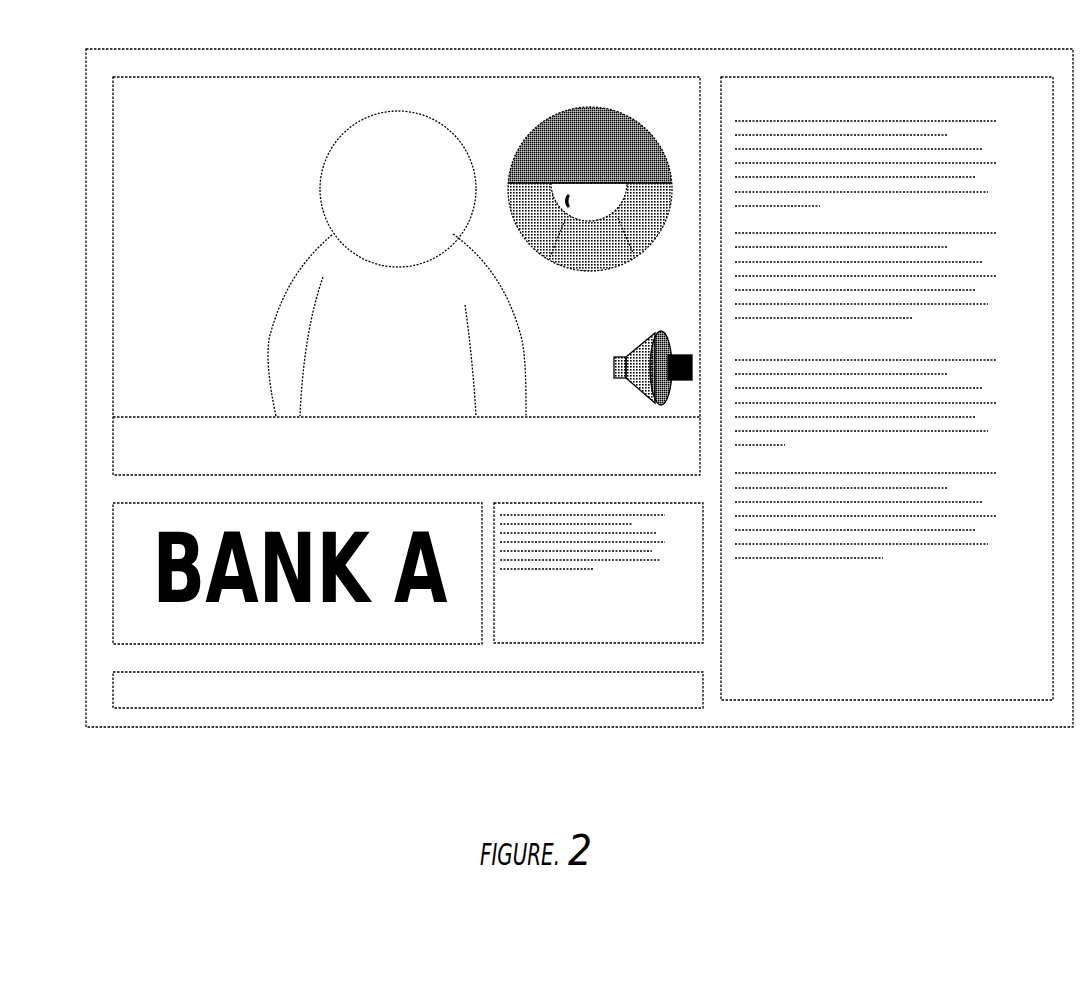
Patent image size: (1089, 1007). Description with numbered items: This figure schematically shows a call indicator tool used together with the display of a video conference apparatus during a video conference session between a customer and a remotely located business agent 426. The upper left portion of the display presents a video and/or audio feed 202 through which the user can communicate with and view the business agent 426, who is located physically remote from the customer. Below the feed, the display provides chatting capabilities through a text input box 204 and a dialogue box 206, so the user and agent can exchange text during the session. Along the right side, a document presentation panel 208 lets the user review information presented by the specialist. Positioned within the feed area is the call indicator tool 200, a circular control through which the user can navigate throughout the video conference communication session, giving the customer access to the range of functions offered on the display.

The call indicator tool 200 is at (578, 272).
The video and/or audio feed 202 is at (473, 110).
The text input box 204 is at (312, 699).
The dialogue box 206 is at (663, 623).
The document presentation panel 208 is at (965, 678).
The business agent 426 is at (284, 317).